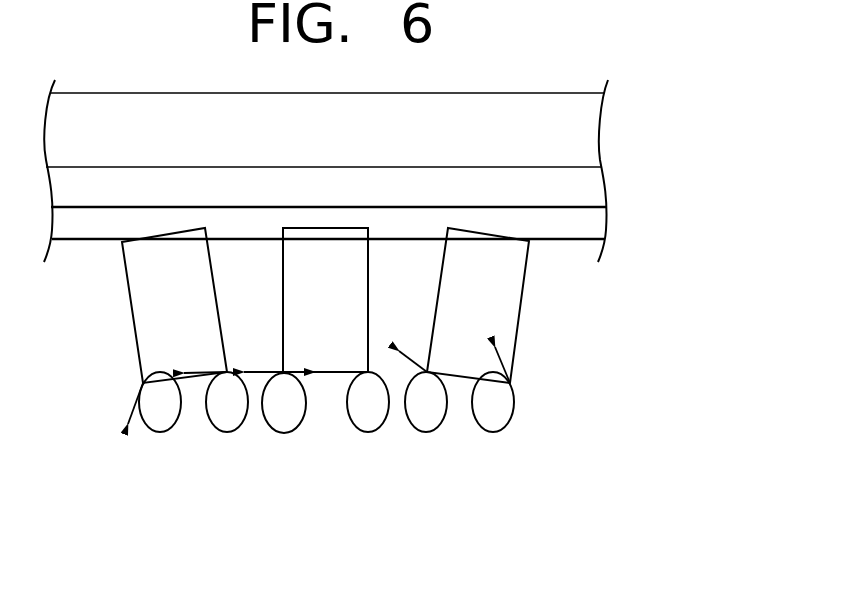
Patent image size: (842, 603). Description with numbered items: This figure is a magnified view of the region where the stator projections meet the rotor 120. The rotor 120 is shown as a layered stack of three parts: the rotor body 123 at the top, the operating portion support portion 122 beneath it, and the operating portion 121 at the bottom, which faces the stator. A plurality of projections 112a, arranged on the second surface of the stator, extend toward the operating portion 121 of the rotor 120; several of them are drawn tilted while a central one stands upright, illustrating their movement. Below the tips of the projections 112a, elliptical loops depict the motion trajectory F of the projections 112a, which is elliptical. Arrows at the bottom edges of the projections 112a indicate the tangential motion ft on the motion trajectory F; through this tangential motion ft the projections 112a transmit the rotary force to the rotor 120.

The rotor 120 is at (400, 171).
The operating portion 121 is at (371, 223).
The operating portion support portion 122 is at (588, 182).
The rotor body 123 is at (588, 127).
The projections 112a is at (510, 306).
The tangential motion ft is at (338, 373).
The motion trajectory F is at (367, 432).